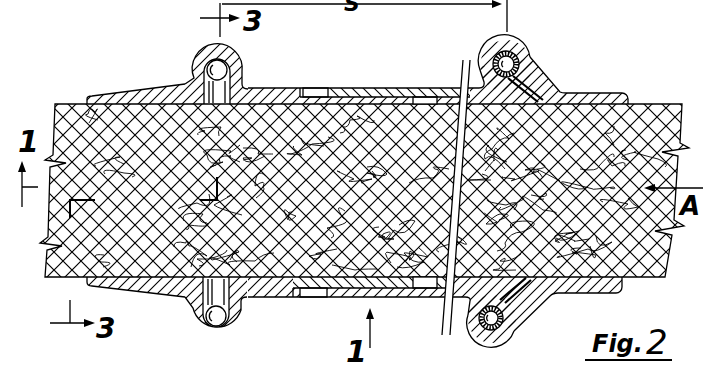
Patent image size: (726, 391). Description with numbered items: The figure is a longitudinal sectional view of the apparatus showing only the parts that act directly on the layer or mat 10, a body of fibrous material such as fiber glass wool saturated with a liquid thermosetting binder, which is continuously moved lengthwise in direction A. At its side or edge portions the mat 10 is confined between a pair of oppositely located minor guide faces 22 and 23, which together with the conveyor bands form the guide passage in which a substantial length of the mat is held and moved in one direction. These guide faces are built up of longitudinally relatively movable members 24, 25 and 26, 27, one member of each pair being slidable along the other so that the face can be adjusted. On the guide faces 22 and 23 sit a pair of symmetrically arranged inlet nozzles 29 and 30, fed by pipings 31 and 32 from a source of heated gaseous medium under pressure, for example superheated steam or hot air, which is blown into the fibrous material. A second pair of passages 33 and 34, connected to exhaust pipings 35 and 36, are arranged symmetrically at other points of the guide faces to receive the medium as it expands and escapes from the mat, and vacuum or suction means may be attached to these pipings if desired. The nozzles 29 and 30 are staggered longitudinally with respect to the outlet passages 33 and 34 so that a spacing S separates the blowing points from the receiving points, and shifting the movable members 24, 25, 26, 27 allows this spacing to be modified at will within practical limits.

The layer or mat 10 is at (292, 278).
The minor guide face 22 is at (292, 98).
The minor guide face 23 is at (398, 297).
The guide face member 24 is at (168, 86).
The guide face member 25 is at (600, 95).
The guide face member 26 is at (166, 298).
The guide face member 27 is at (565, 293).
The inlet nozzle 29 is at (543, 90).
The inlet nozzle 30 is at (525, 312).
The feed piping 31 is at (518, 62).
The feed piping 32 is at (478, 342).
The outlet passage 33 is at (205, 60).
The outlet passage 34 is at (187, 316).
The exhaust piping 35 is at (242, 66).
The exhaust piping 36 is at (222, 318).